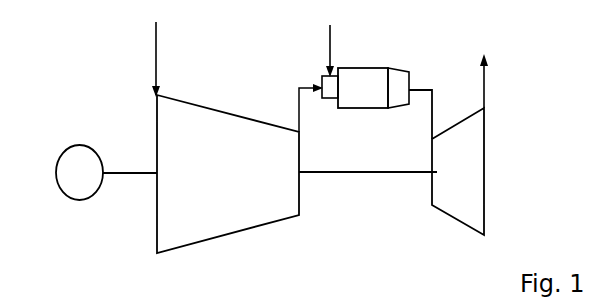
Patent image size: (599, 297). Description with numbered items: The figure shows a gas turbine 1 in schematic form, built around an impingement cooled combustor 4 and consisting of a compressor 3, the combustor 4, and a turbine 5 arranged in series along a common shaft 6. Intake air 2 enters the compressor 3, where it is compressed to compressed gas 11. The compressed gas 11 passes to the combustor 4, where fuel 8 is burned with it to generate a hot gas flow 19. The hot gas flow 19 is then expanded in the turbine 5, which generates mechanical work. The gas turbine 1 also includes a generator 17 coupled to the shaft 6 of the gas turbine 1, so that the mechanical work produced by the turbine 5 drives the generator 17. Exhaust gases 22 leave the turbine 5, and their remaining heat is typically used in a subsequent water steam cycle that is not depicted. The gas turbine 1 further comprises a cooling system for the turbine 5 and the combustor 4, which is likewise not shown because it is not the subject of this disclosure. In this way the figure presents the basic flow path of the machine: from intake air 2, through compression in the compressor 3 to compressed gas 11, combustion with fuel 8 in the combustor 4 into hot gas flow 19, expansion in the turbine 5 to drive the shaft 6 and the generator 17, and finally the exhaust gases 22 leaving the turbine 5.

The gas turbine 1 is at (85, 34).
The intake air 2 is at (147, 59).
The compressor 3 is at (228, 174).
The combustor 4 is at (372, 65).
The turbine 5 is at (458, 171).
The shaft 6 is at (270, 163).
The fuel 8 is at (336, 51).
The compressed gas 11 is at (297, 105).
The generator 17 is at (79, 172).
The hot gas flow 19 is at (430, 106).
The exhaust gas 22 is at (498, 81).